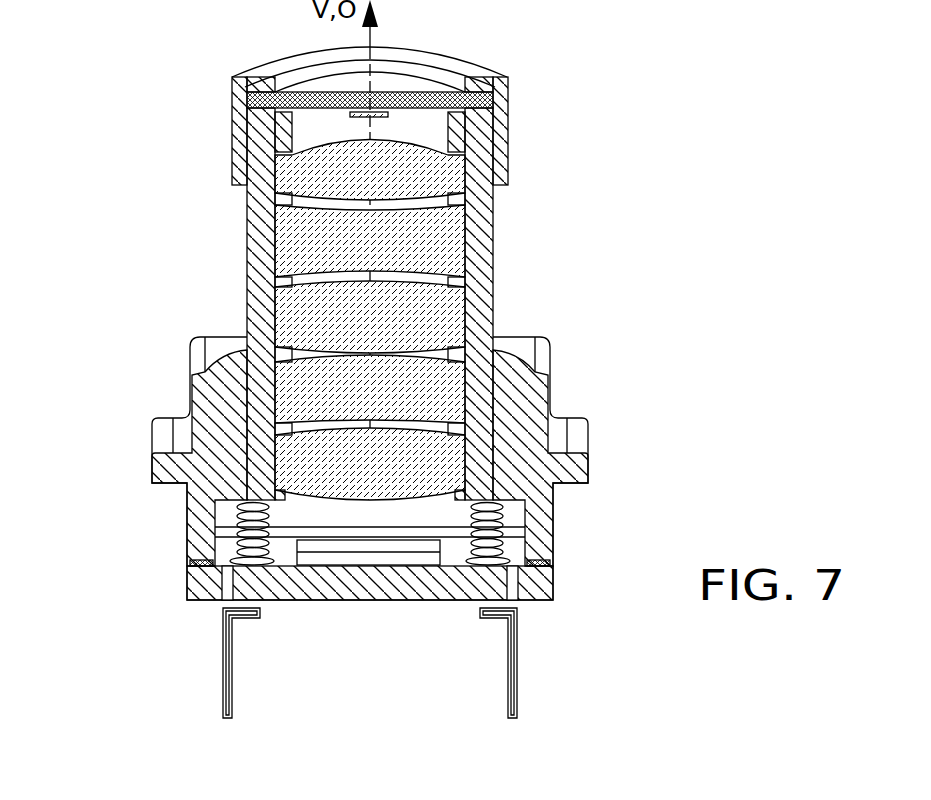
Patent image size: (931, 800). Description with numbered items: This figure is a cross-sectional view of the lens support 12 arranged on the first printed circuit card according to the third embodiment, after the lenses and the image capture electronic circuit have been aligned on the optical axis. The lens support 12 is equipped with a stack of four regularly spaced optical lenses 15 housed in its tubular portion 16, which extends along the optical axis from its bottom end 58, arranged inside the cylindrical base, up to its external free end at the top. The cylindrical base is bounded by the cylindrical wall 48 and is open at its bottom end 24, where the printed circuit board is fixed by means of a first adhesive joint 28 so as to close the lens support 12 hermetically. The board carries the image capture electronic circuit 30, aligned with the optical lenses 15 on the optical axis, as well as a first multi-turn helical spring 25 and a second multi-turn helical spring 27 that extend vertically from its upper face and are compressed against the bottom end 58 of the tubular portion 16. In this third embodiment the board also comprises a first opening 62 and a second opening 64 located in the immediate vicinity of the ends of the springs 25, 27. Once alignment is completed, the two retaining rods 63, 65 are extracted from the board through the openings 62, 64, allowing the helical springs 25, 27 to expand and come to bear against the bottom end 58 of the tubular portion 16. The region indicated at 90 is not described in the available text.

The lens support 12 is at (182, 168).
The optical lenses 15 is at (390, 198).
The tubular portion 16 is at (245, 308).
The cylindrical wall 48 is at (153, 393).
The bottom lens element 90 is at (382, 508).
The bottom end 58 is at (228, 508).
The first multi-turn helical spring 25 is at (237, 532).
The second multi-turn helical spring 27 is at (523, 540).
The first adhesive joint 28 is at (250, 563).
The bottom end 24 is at (548, 570).
The first opening 62 is at (222, 603).
The second opening 64 is at (518, 604).
The retaining rod 63 is at (222, 683).
The retaining rod 65 is at (518, 683).
The image capture electronic circuit 30 is at (345, 548).